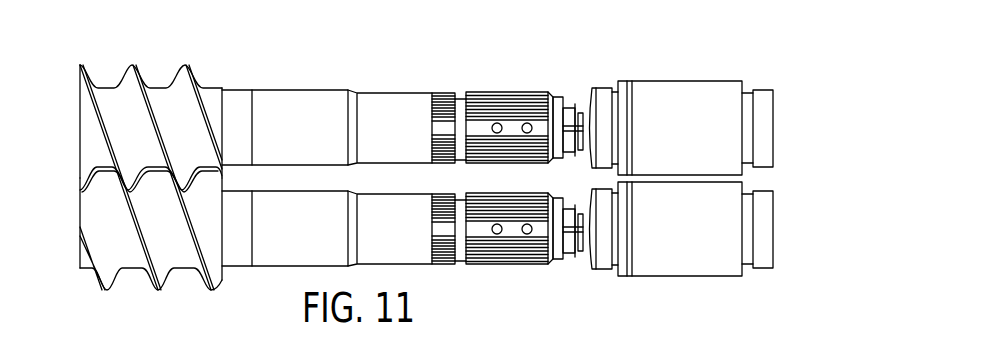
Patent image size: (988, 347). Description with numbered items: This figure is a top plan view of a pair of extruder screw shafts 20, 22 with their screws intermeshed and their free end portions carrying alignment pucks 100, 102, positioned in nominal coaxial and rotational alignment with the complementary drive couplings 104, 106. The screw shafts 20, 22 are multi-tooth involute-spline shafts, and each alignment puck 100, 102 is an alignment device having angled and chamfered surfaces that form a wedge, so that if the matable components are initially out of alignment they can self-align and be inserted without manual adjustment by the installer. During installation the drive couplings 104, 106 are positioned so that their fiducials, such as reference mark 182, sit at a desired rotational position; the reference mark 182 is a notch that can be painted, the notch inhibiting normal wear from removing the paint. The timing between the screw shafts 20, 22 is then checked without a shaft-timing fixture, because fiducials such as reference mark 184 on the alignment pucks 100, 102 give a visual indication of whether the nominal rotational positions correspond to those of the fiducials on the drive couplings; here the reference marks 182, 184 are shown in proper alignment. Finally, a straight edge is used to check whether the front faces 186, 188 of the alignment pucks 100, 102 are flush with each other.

The screw shaft 20 is at (279, 88).
The screw shaft 22 is at (253, 268).
The alignment puck 100 is at (556, 96).
The alignment puck 102 is at (561, 260).
The drive coupling 104 is at (672, 82).
The drive coupling 106 is at (686, 277).
The reference mark 182 is at (590, 130).
The reference mark 184 is at (560, 140).
The front face 186 is at (578, 108).
The front face 188 is at (576, 258).